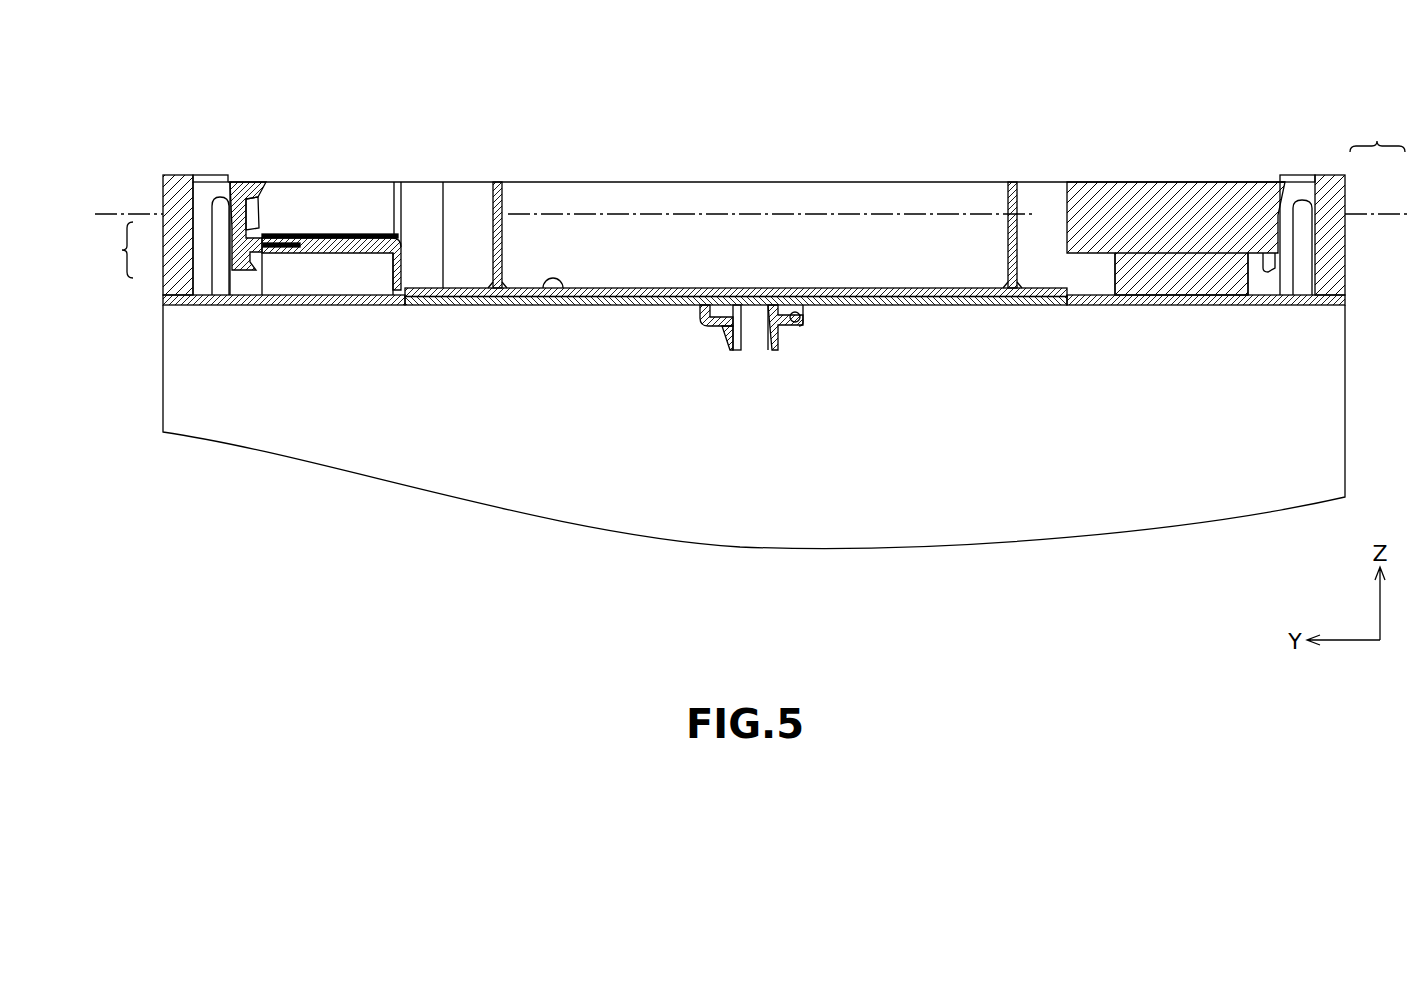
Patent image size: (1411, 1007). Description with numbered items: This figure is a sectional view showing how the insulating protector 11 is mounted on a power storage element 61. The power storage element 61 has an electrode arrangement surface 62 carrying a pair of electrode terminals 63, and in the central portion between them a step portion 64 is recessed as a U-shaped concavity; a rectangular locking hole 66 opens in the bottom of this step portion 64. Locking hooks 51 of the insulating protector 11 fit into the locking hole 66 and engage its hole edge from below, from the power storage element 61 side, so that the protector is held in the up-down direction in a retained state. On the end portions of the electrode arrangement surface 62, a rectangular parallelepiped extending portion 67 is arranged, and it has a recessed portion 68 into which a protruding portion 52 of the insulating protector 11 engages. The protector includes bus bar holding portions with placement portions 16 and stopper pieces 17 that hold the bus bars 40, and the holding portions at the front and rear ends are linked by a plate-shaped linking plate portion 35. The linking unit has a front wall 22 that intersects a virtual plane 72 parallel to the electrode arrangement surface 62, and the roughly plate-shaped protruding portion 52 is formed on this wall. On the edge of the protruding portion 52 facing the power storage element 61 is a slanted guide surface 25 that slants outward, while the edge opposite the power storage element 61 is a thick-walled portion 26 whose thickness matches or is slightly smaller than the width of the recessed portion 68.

The insulating protector 11 is at (1145, 200).
The placement portion 16 is at (352, 238).
The stopper piece 17 is at (248, 230).
The front wall 22 is at (260, 218).
The slanted guide surface 25 is at (227, 203).
The thick-walled portion 26 is at (218, 190).
The linking plate portion 35 is at (888, 290).
The bus bar 40 is at (306, 236).
The locking hook 51 is at (736, 350).
The protruding portion 52 is at (745, 191).
The power storage element 61 is at (1322, 387).
The electrode arrangement surface 62 is at (562, 290).
The electrode terminal 63 is at (322, 283).
The step portion 64 is at (800, 324).
The locking hole 66 is at (745, 290).
The extending portion 67 is at (177, 176).
The recessed portion 68 is at (204, 190).
The virtual plane 72 is at (100, 212).